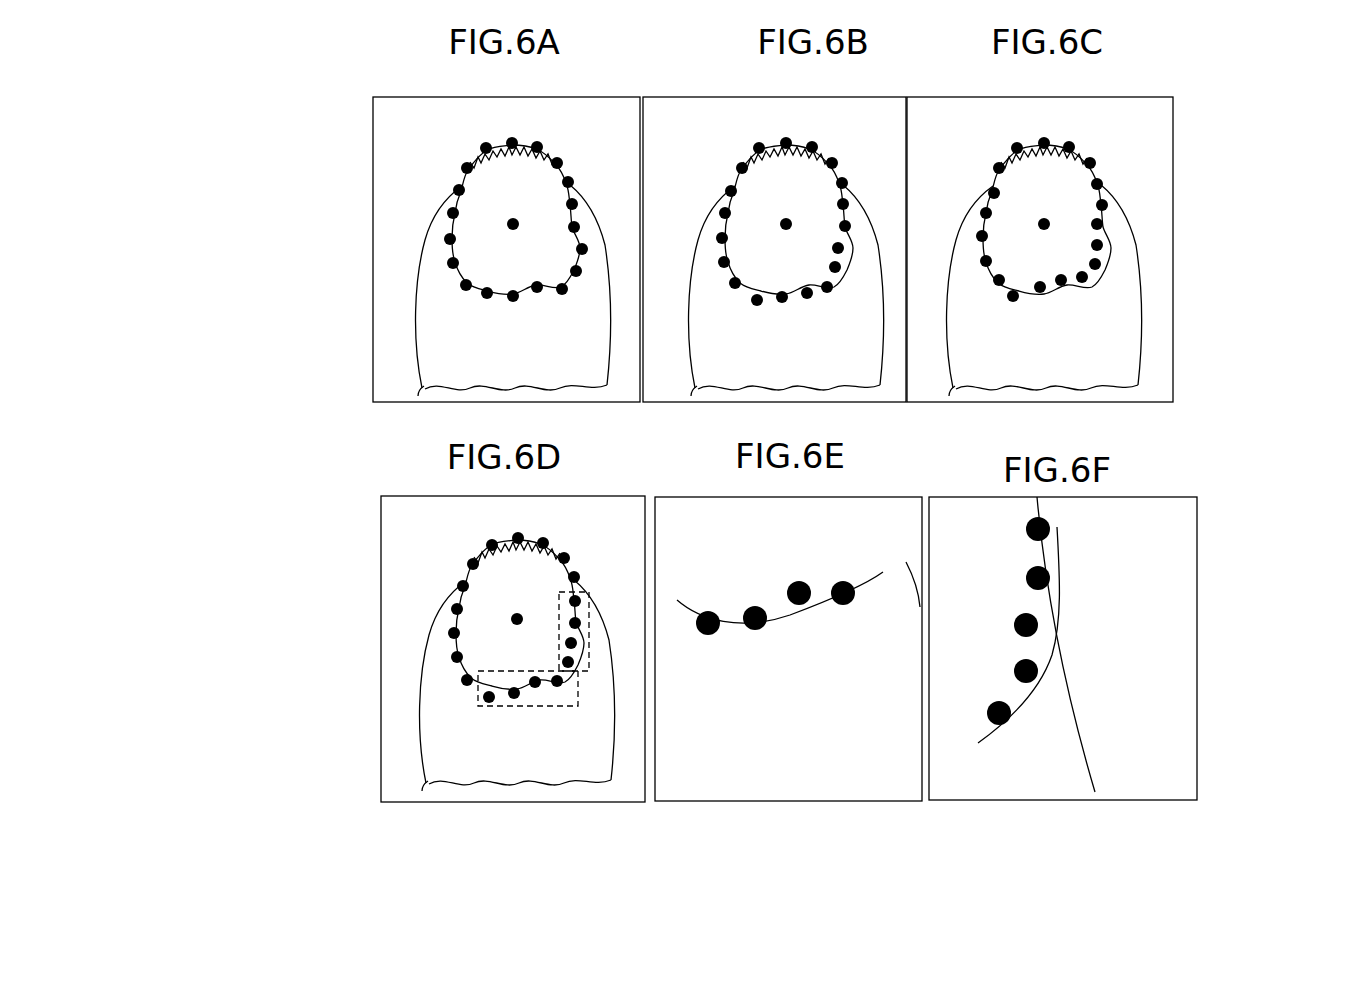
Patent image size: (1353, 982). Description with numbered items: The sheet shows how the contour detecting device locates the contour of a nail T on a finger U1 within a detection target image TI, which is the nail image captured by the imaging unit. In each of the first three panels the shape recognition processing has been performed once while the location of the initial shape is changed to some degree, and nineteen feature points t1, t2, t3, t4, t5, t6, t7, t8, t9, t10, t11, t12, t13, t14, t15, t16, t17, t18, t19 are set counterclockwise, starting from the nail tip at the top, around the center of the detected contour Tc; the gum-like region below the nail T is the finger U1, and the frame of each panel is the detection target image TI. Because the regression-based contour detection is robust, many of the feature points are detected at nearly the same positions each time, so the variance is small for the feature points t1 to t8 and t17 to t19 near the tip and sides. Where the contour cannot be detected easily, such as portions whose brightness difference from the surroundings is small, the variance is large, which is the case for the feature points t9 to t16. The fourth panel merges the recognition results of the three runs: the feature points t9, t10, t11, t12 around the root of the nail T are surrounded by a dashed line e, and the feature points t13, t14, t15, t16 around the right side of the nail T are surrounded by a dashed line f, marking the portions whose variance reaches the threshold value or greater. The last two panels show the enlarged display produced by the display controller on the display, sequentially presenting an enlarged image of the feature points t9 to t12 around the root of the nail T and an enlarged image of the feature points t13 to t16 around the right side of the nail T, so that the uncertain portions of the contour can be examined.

In FIG. 6A, the nail T is at (475, 262).
In FIG. 6B, the nail T is at (760, 291).
In FIG. 6C, the nail T is at (1053, 290).
In FIG. 6D, the nail T is at (469, 621).
In FIG. 6A, the detection target image TI is at (373, 118).
In FIG. 6B, the detection target image TI is at (712, 97).
In FIG. 6C, the detection target image TI is at (1173, 226).
In FIG. 6A, the center of the detected contour Tc is at (514, 219).
In FIG. 6B, the center of the detected contour Tc is at (787, 218).
In FIG. 6C, the center of the detected contour Tc is at (1046, 219).
In FIG. 6D, the center of the detected contour Tc is at (518, 613).
In FIG. 6A, the finger U1 is at (440, 378).
In FIG. 6B, the finger U1 is at (786, 311).
In FIG. 6C, the finger U1 is at (1044, 317).
In FIG. 6D, the finger U1 is at (474, 693).
In FIG. 6D, the region of large variance around the nail root e is at (567, 708).
In FIG. 6D, the region of large variance around the right side of the nail f is at (589, 672).
In FIG. 6A, the feature point t1 is at (511, 138).
In FIG. 6B, the feature point t1 is at (787, 137).
In FIG. 6C, the feature point t1 is at (1046, 138).
In FIG. 6D, the feature point t1 is at (514, 535).
In FIG. 6A, the feature point t2 is at (484, 144).
In FIG. 6B, the feature point t2 is at (760, 142).
In FIG. 6C, the feature point t2 is at (1019, 153).
In FIG. 6D, the feature point t2 is at (486, 544).
In FIG. 6A, the feature point t3 is at (461, 166).
In FIG. 6B, the feature point t3 is at (743, 162).
In FIG. 6C, the feature point t3 is at (1001, 162).
In FIG. 6D, the feature point t3 is at (467, 563).
In FIG. 6A, the feature point t4 is at (453, 188).
In FIG. 6B, the feature point t4 is at (731, 185).
In FIG. 6C, the feature point t4 is at (993, 187).
In FIG. 6D, the feature point t4 is at (457, 585).
In FIG. 6A, the feature point t5 is at (447, 212).
In FIG. 6B, the feature point t5 is at (725, 207).
In FIG. 6C, the feature point t5 is at (985, 207).
In FIG. 6D, the feature point t5 is at (451, 608).
In FIG. 6A, the feature point t6 is at (444, 238).
In FIG. 6B, the feature point t6 is at (721, 231).
In FIG. 6C, the feature point t6 is at (982, 230).
In FIG. 6D, the feature point t6 is at (448, 633).
In FIG. 6A, the feature point t7 is at (447, 263).
In FIG. 6B, the feature point t7 is at (722, 268).
In FIG. 6C, the feature point t7 is at (985, 267).
In FIG. 6D, the feature point t7 is at (451, 657).
In FIG. 6A, the feature point t8 is at (461, 287).
In FIG. 6B, the feature point t8 is at (735, 289).
In FIG. 6C, the feature point t8 is at (1001, 286).
In FIG. 6D, the feature point t8 is at (461, 681).
In FIG. 6A, the feature point t9 is at (482, 294).
In FIG. 6B, the feature point t9 is at (757, 306).
In FIG. 6C, the feature point t9 is at (1015, 302).
In FIG. 6D, the feature point t9 is at (483, 698).
In FIG. 6E, the feature point t9 is at (706, 611).
In FIG. 6A, the feature point t10 is at (507, 297).
In FIG. 6B, the feature point t10 is at (783, 303).
In FIG. 6C, the feature point t10 is at (1045, 290).
In FIG. 6D, the feature point t10 is at (508, 694).
In FIG. 6E, the feature point t10 is at (752, 606).
In FIG. 6A, the feature point t11 is at (537, 293).
In FIG. 6B, the feature point t11 is at (808, 299).
In FIG. 6C, the feature point t11 is at (1066, 283).
In FIG. 6D, the feature point t11 is at (534, 688).
In FIG. 6E, the feature point t11 is at (800, 581).
In FIG. 6A, the feature point t12 is at (561, 295).
In FIG. 6B, the feature point t12 is at (828, 293).
In FIG. 6C, the feature point t12 is at (1087, 279).
In FIG. 6D, the feature point t12 is at (557, 687).
In FIG. 6E, the feature point t12 is at (846, 581).
In FIG. 6F, the feature point t12 is at (1011, 718).
In FIG. 6A, the feature point t13 is at (576, 277).
In FIG. 6B, the feature point t13 is at (837, 273).
In FIG. 6C, the feature point t13 is at (1101, 265).
In FIG. 6D, the feature point t13 is at (569, 668).
In FIG. 6F, the feature point t13 is at (1038, 677).
In FIG. 6A, the feature point t14 is at (583, 255).
In FIG. 6B, the feature point t14 is at (840, 254).
In FIG. 6C, the feature point t14 is at (1102, 243).
In FIG. 6D, the feature point t14 is at (573, 649).
In FIG. 6F, the feature point t14 is at (1038, 628).
In FIG. 6A, the feature point t15 is at (576, 223).
In FIG. 6B, the feature point t15 is at (848, 221).
In FIG. 6C, the feature point t15 is at (1102, 222).
In FIG. 6D, the feature point t15 is at (577, 629).
In FIG. 6F, the feature point t15 is at (1050, 576).
In FIG. 6A, the feature point t16 is at (574, 200).
In FIG. 6B, the feature point t16 is at (846, 200).
In FIG. 6C, the feature point t16 is at (1106, 202).
In FIG. 6D, the feature point t16 is at (578, 597).
In FIG. 6F, the feature point t16 is at (1049, 523).
In FIG. 6A, the feature point t17 is at (570, 178).
In FIG. 6B, the feature point t17 is at (844, 177).
In FIG. 6C, the feature point t17 is at (1101, 180).
In FIG. 6D, the feature point t17 is at (576, 572).
In FIG. 6A, the feature point t18 is at (559, 159).
In FIG. 6B, the feature point t18 is at (834, 158).
In FIG. 6C, the feature point t18 is at (1094, 159).
In FIG. 6D, the feature point t18 is at (566, 553).
In FIG. 6A, the feature point t19 is at (537, 142).
In FIG. 6B, the feature point t19 is at (813, 141).
In FIG. 6C, the feature point t19 is at (1071, 142).
In FIG. 6D, the feature point t19 is at (541, 538).